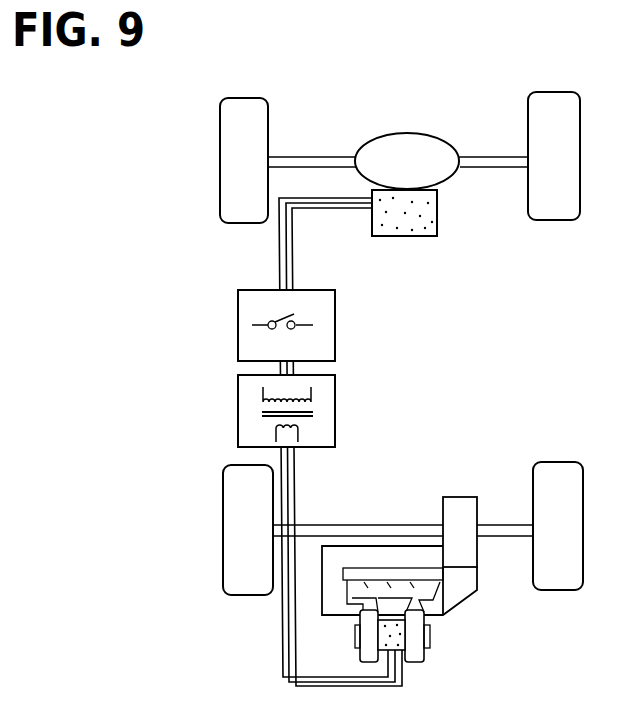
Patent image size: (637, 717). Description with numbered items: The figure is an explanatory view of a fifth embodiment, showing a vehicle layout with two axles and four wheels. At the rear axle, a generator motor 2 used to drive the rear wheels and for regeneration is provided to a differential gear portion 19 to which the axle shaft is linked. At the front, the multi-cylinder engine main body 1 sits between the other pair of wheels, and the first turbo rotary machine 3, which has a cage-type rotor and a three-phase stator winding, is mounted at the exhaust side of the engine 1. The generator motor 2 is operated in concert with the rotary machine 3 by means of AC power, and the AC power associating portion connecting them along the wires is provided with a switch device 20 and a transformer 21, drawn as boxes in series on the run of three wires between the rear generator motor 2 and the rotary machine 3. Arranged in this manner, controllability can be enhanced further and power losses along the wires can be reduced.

The differential gear portion 19 is at (408, 157).
The generator motor 2 is at (422, 233).
The switch device 20 is at (322, 323).
The transformer 21 is at (322, 408).
The engine main body 1 is at (337, 566).
The rotary machine 3 is at (403, 641).